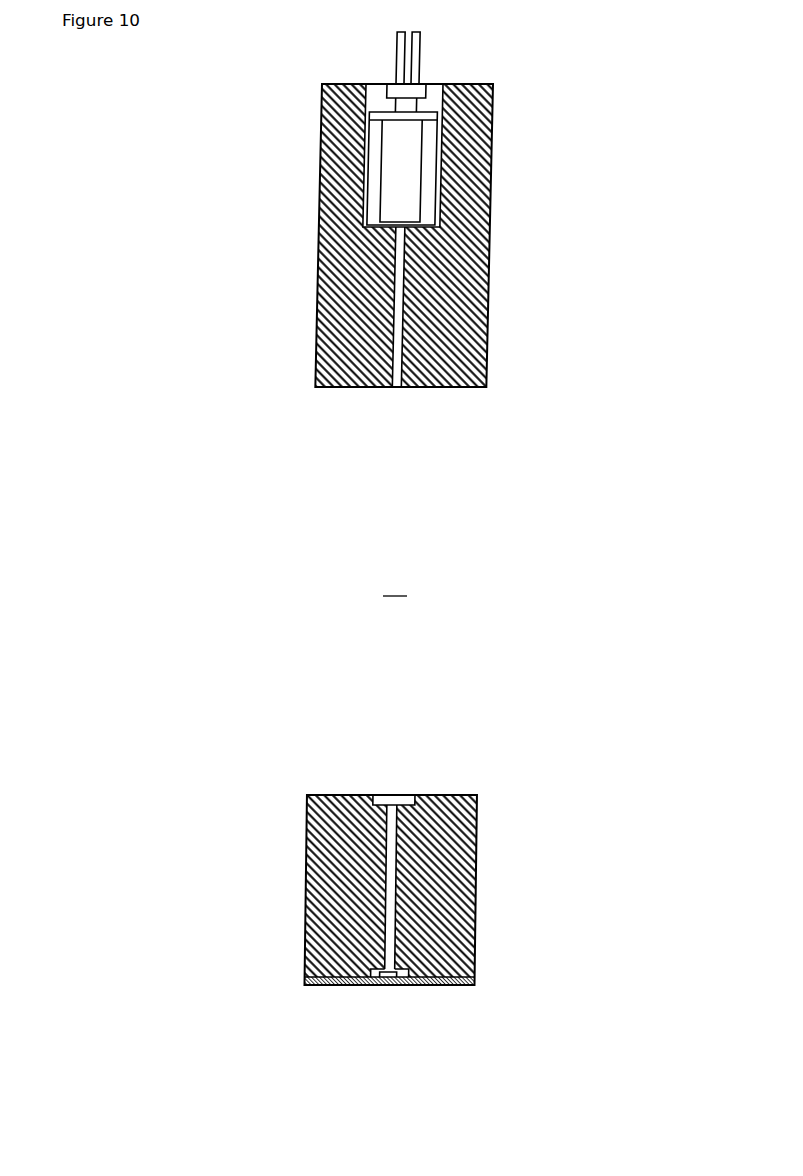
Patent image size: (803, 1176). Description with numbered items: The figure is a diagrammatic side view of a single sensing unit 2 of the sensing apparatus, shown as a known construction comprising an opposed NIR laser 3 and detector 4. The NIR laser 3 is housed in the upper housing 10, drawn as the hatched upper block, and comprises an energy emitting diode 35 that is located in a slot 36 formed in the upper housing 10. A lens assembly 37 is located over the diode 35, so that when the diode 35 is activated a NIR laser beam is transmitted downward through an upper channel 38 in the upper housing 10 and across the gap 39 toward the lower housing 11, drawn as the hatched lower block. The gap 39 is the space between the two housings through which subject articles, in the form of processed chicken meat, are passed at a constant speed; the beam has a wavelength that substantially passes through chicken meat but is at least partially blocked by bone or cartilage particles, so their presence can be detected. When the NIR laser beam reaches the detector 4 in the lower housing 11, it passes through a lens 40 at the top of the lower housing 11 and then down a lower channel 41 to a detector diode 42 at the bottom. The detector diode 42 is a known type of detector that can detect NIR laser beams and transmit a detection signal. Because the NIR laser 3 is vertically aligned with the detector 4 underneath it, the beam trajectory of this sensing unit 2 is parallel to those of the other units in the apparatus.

The sensing unit 2 is at (179, 168).
The NIR laser 3 is at (551, 202).
The detector 4 is at (541, 822).
The upper housing 10 is at (322, 166).
The lower housing 11 is at (307, 845).
The energy emitting diode 35 is at (387, 90).
The slot 36 is at (352, 134).
The lens assembly 37 is at (383, 193).
The upper channel 38 is at (397, 284).
The gap 39 is at (395, 585).
The lens 40 is at (373, 801).
The lower channel 41 is at (387, 875).
The detector diode 42 is at (374, 973).